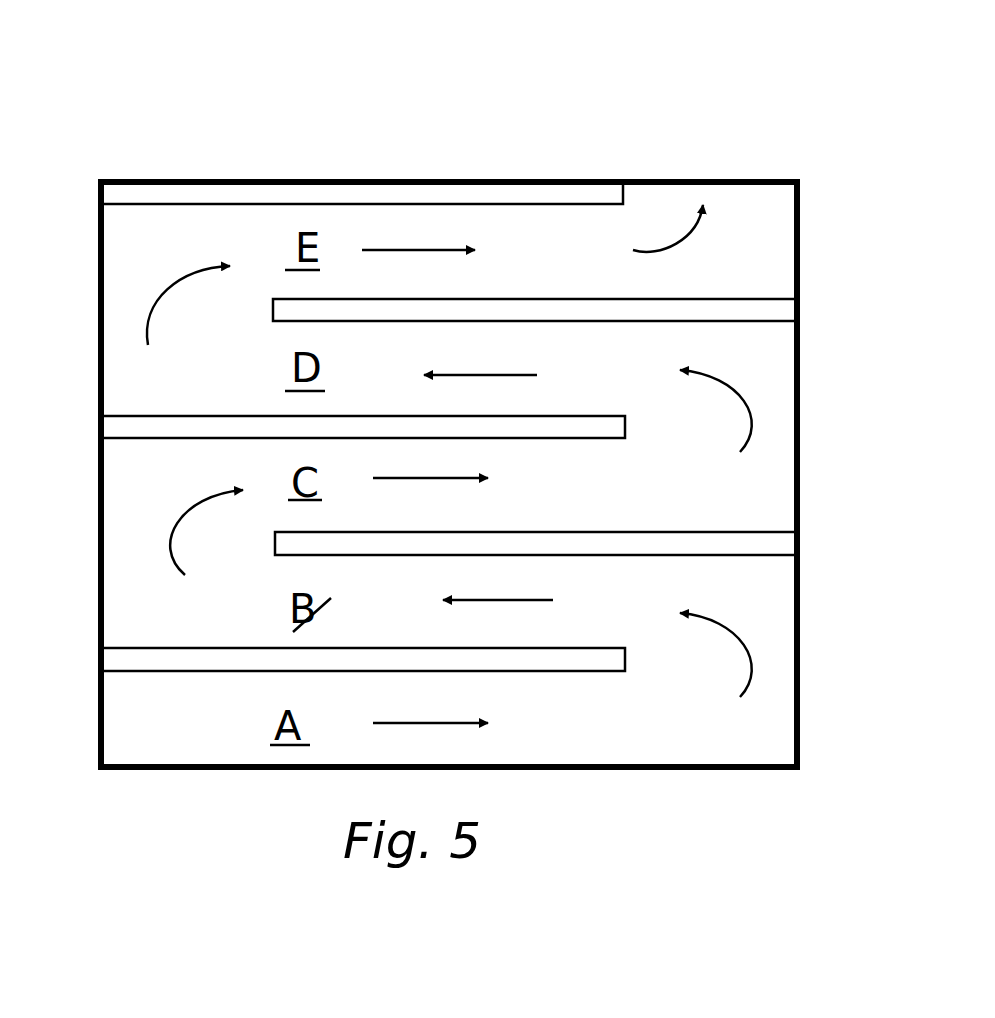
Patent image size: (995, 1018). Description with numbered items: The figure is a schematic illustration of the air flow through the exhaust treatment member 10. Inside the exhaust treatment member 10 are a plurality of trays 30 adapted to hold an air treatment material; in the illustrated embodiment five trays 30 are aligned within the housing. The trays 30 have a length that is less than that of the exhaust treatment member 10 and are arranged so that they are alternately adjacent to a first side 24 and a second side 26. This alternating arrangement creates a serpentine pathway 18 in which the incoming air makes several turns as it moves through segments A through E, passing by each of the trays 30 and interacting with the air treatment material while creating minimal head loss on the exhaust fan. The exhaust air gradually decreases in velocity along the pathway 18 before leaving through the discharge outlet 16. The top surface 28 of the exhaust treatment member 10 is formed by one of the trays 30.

The exhaust treatment member 10 is at (242, 168).
The discharge outlet 16 is at (712, 170).
The serpentine pathway 18 is at (675, 740).
The first side 24 is at (98, 538).
The second side 26 is at (800, 545).
The top surface 28 is at (355, 188).
The trays 30 is at (170, 195).